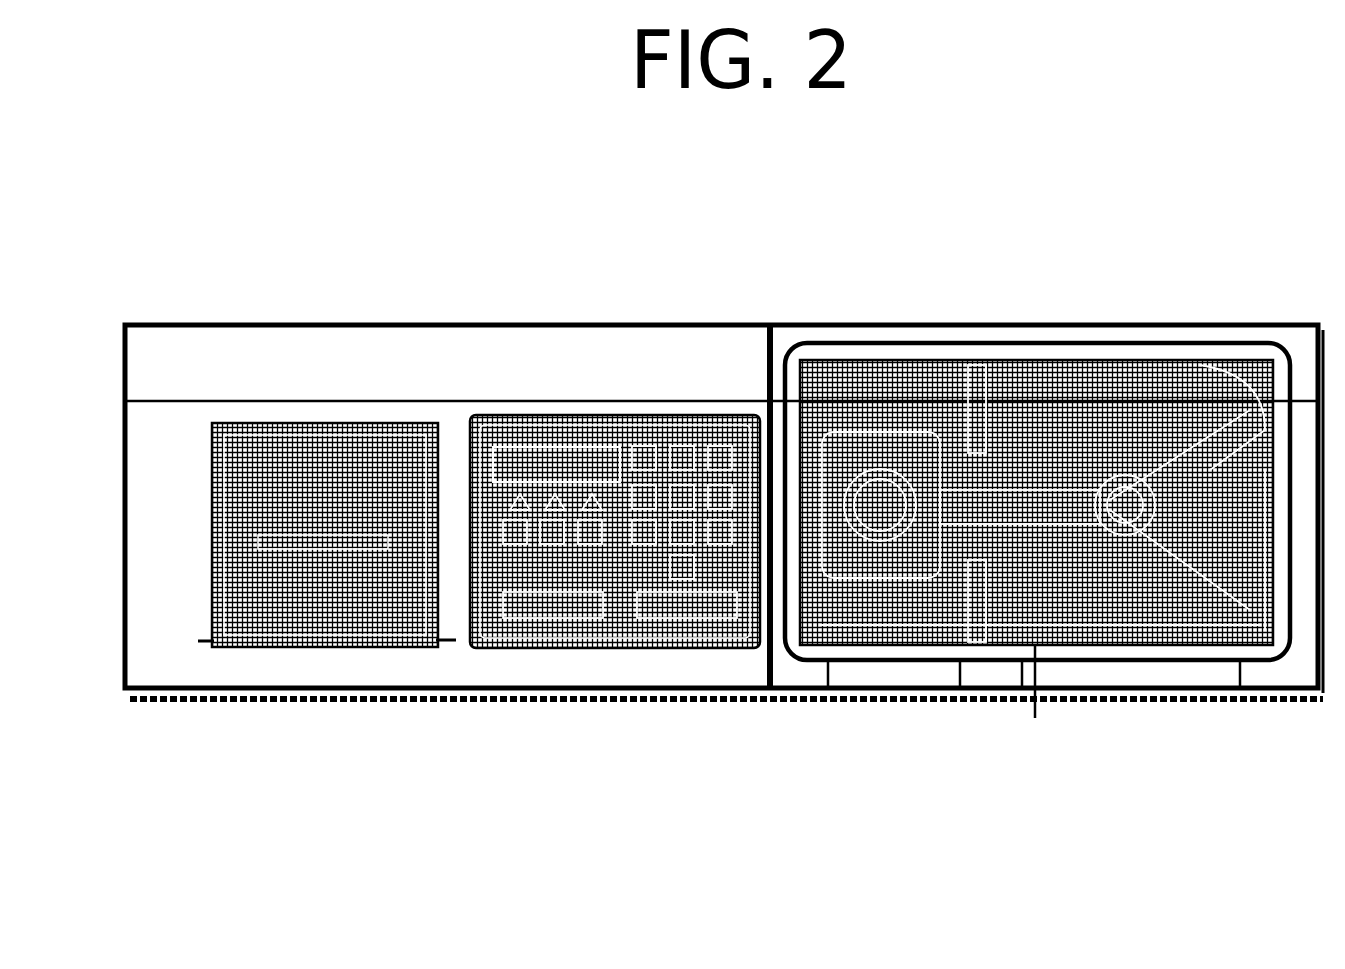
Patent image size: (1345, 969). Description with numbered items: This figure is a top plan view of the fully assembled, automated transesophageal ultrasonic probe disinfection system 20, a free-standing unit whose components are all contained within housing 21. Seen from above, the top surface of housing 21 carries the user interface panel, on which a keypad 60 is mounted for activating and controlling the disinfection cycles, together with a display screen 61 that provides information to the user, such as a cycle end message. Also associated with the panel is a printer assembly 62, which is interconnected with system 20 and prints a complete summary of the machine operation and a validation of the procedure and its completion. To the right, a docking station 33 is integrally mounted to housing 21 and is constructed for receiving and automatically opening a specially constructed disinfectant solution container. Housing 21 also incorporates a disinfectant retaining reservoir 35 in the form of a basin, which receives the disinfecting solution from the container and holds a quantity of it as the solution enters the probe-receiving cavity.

The transesophageal ultrasonic probe disinfection system 20 is at (452, 206).
The housing 21 is at (532, 322).
The docking station 33 is at (826, 645).
The disinfectant retaining reservoir 35 is at (1183, 645).
The keypad 60 is at (608, 648).
The display screen 61 is at (600, 452).
The printer assembly 62 is at (365, 645).